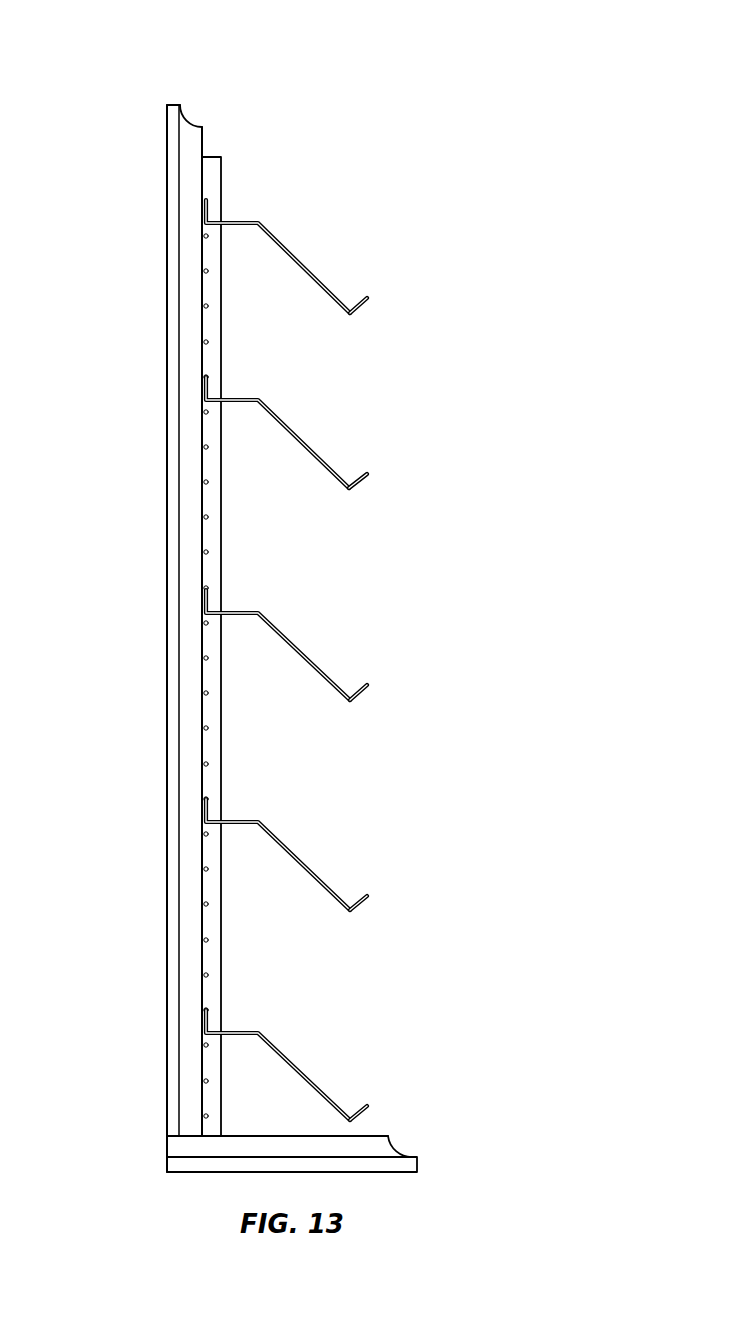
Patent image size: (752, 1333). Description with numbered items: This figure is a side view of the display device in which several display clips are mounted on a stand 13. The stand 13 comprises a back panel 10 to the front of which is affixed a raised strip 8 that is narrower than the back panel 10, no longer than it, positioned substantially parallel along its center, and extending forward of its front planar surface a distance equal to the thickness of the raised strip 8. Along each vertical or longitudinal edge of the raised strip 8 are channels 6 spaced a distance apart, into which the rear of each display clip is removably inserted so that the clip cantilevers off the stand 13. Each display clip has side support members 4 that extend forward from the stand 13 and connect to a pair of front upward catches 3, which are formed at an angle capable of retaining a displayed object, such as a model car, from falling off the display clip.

The stand 13 is at (126, 68).
The back panel 10 is at (203, 145).
The raised strip 8 is at (221, 568).
The channels 6 is at (206, 517).
The side support members 4 is at (277, 412).
The upward catches 3 is at (368, 474).